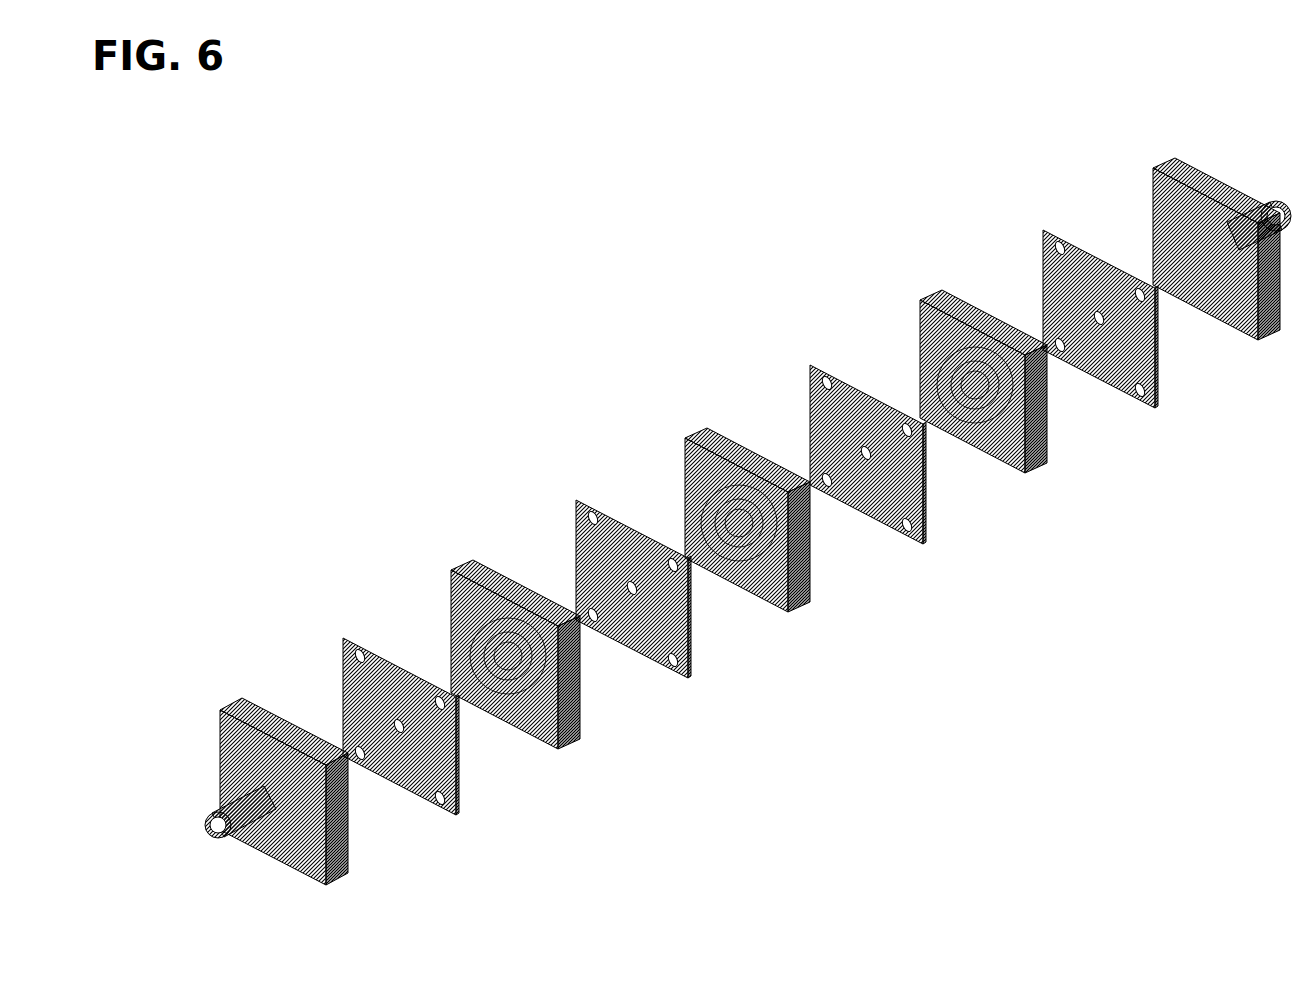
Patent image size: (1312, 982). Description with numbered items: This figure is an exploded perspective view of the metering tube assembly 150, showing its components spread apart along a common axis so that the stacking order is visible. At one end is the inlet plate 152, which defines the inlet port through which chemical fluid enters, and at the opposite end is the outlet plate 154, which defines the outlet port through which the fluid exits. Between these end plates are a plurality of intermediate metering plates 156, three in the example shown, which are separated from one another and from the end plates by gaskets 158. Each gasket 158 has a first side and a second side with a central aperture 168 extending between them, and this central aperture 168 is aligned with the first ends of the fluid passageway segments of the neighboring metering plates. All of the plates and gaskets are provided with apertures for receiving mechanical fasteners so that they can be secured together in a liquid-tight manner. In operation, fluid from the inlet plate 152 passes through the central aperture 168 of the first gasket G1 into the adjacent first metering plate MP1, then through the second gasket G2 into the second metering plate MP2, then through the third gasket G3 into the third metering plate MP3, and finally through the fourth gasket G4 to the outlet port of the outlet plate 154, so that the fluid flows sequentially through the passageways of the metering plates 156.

The metering tube assembly 150 is at (312, 348).
The inlet plate 152 is at (283, 852).
The outlet plate 154 is at (1215, 282).
The metering plate 156 is at (742, 547).
The gasket 158 is at (746, 547).
The central aperture 168 is at (388, 725).
The first gasket G1 is at (362, 628).
The second gasket G2 is at (597, 505).
The third gasket G3 is at (826, 362).
The fourth gasket G4 is at (1072, 240).
The first metering plate MP1 is at (470, 562).
The second metering plate MP2 is at (715, 453).
The third metering plate MP3 is at (940, 293).